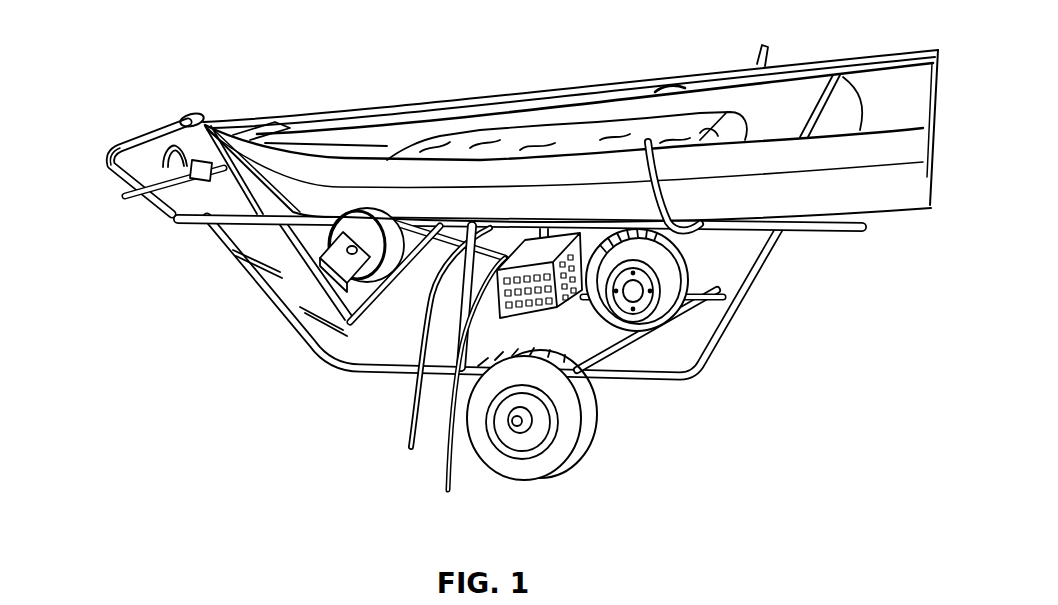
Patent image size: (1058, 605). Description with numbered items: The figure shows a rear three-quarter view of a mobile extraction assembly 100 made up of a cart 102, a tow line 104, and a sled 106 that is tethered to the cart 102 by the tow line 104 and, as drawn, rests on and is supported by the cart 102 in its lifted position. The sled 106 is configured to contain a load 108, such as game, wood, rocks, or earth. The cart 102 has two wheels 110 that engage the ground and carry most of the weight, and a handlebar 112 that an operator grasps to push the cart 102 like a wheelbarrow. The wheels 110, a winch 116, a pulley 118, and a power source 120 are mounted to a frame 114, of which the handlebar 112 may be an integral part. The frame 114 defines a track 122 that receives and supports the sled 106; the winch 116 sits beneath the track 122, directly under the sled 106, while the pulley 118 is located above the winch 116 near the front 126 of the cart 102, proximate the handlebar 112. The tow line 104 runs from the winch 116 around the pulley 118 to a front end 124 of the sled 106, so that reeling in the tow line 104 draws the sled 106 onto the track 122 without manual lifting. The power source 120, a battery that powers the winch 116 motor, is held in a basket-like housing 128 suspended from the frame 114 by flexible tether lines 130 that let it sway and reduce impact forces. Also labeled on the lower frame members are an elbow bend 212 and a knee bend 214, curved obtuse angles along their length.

The mobile extraction assembly 100 is at (274, 82).
The cart 102 is at (235, 252).
The tow line 104 is at (290, 250).
The sled 106 is at (404, 130).
The load 108 is at (518, 142).
The wheels 110 is at (535, 442).
The handlebar 112 is at (117, 146).
The frame 114 is at (393, 370).
The winch 116 is at (345, 300).
The pulley 118 is at (186, 163).
The power source 120 is at (463, 375).
The track 122 is at (210, 198).
The front end 124 is at (182, 118).
The front 126 is at (131, 116).
The housing 128 is at (552, 313).
The flexible tether lines 130 is at (439, 353).
The elbow bend 212 is at (350, 360).
The knee bend 214 is at (758, 255).